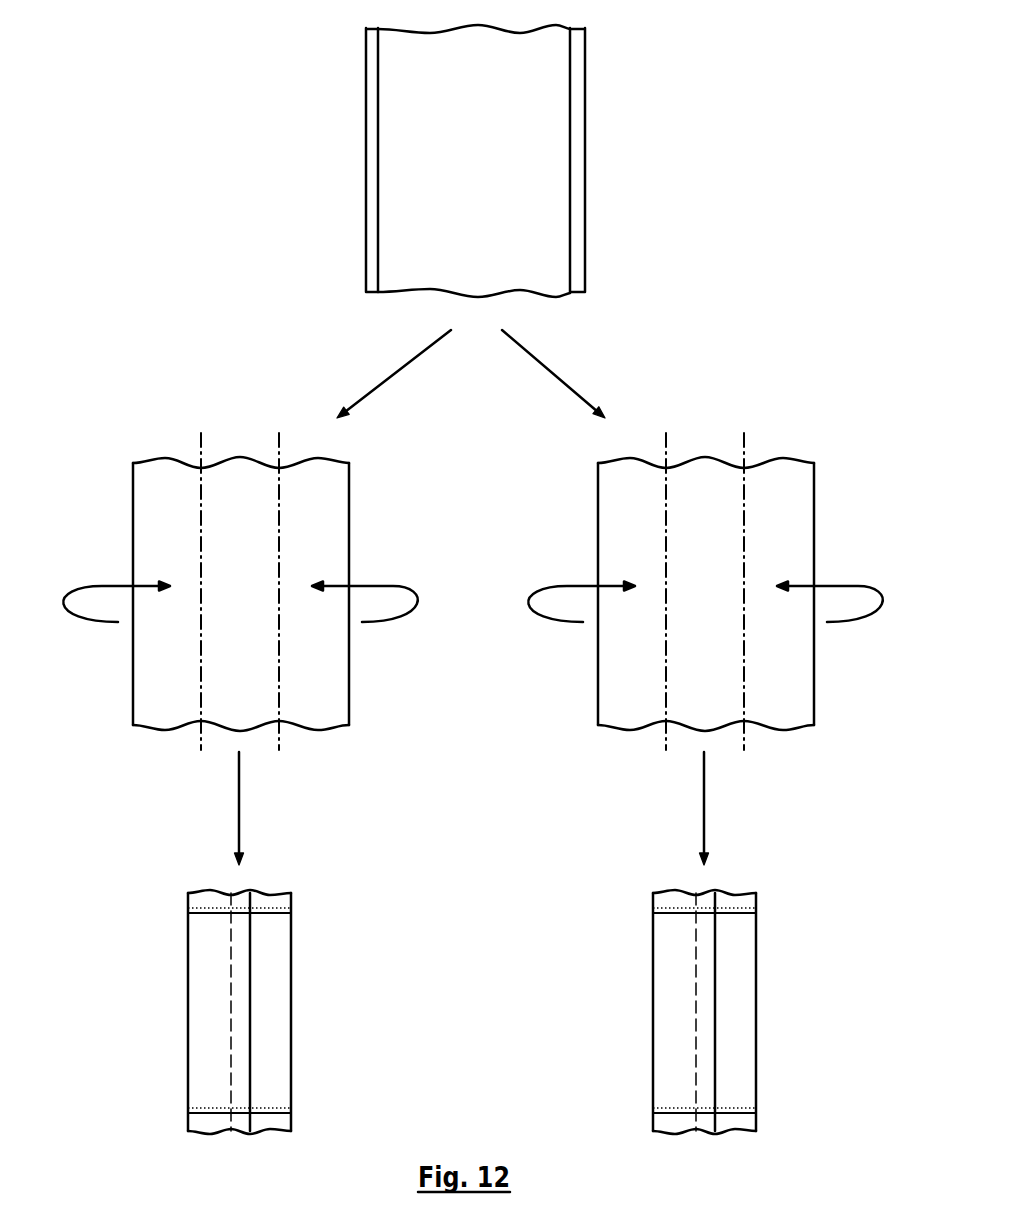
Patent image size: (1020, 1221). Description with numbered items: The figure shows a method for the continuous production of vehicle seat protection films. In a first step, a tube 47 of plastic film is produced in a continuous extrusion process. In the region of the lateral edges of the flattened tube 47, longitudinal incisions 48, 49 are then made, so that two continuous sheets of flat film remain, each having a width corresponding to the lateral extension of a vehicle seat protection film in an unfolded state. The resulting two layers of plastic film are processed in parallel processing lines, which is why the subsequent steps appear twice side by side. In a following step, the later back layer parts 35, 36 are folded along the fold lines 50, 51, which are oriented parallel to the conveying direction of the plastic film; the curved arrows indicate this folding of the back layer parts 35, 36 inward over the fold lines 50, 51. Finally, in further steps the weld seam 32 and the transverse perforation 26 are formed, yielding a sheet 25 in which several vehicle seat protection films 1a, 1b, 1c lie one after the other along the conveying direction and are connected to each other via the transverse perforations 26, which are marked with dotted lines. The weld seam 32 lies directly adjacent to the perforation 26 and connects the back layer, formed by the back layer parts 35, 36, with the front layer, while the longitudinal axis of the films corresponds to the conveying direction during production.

The tube 47 is at (490, 161).
The longitudinal incision 48 is at (378, 201).
The longitudinal incision 49 is at (571, 175).
The back layer part 35 is at (162, 508).
The back layer part 36 is at (330, 517).
The fold line 50 is at (201, 681).
The fold line 51 is at (279, 681).
The vehicle seat protection film 1a is at (191, 902).
The vehicle seat protection film 1b is at (206, 968).
The vehicle seat protection film 1c is at (196, 1120).
The sheet 25 is at (277, 1013).
The transverse perforation 26 is at (268, 909).
The weld seam 32 is at (283, 914).